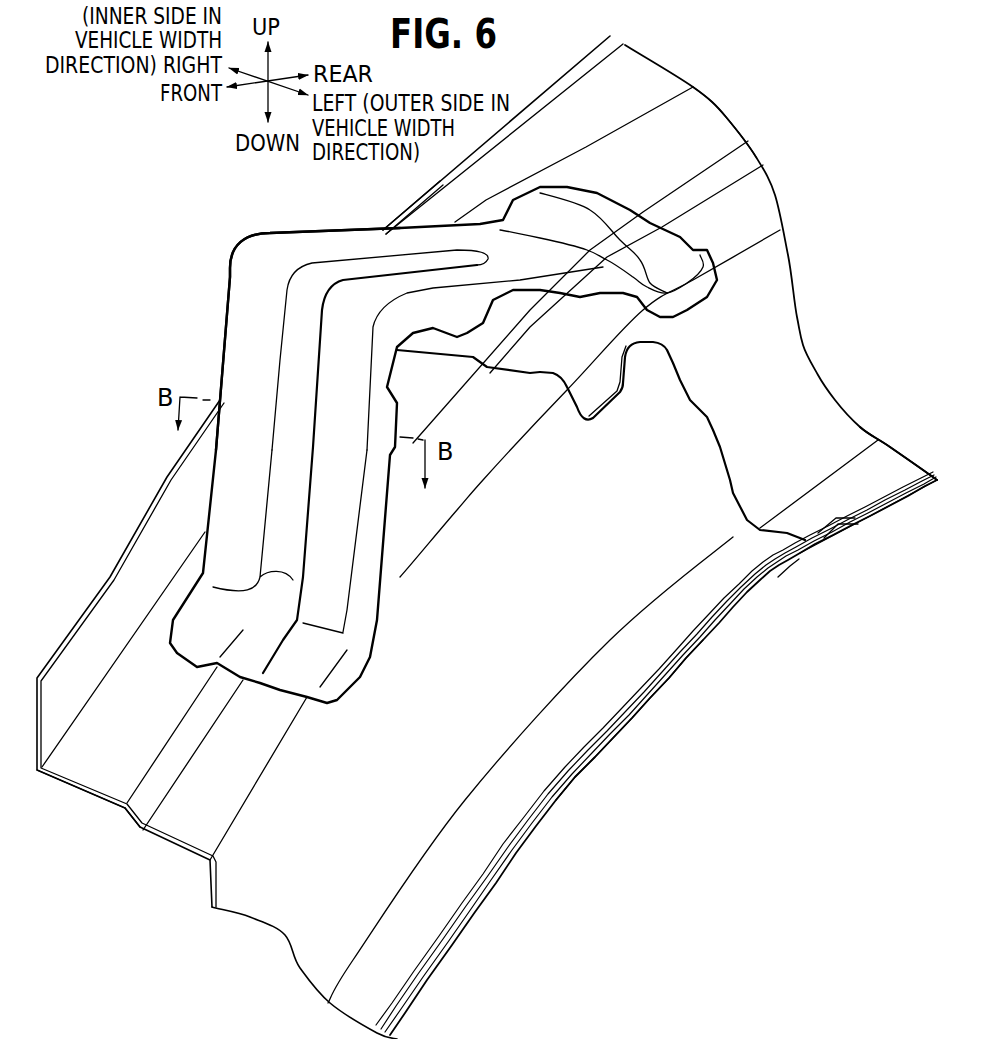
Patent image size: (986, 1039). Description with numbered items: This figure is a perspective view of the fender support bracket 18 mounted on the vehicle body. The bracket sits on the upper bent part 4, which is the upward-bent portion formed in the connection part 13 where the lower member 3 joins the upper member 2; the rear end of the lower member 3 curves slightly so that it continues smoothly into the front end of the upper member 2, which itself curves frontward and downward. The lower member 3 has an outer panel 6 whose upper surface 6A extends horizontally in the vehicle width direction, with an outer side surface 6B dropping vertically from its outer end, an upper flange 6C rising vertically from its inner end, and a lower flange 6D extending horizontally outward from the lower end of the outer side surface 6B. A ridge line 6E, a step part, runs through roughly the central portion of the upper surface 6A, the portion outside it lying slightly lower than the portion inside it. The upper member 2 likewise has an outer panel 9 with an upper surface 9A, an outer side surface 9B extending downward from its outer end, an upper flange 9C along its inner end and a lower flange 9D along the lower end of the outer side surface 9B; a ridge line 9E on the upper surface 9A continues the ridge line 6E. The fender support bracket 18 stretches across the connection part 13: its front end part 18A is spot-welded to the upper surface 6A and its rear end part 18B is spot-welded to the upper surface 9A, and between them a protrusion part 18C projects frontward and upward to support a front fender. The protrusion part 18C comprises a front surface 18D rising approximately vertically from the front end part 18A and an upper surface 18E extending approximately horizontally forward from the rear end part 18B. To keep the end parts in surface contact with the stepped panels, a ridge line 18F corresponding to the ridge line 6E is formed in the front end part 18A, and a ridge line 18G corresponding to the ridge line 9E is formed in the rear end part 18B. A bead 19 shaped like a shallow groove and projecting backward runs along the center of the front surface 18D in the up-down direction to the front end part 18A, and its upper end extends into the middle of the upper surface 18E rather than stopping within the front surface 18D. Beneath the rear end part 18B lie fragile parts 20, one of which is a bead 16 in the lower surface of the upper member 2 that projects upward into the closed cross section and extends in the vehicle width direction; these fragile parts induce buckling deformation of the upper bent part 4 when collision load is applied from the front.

The upper member 2 is at (883, 521).
The lower member 3 is at (550, 820).
The upper bent part 4 is at (690, 688).
The outer panel 6 is at (82, 804).
The upper surface 6A is at (85, 770).
The outer side surface 6B is at (313, 870).
The upper flange 6C is at (83, 650).
The lower flange 6D is at (407, 937).
The ridge line 6E is at (127, 827).
The outer panel 9 is at (717, 79).
The upper surface 9A is at (719, 130).
The outer side surface 9B is at (783, 329).
The upper flange 9C is at (650, 80).
The lower flange 9D is at (888, 473).
The ridge line 9E is at (752, 167).
The connection part 13 is at (672, 526).
The bead 16 is at (790, 567).
The fender support bracket 18 is at (203, 306).
The front end part 18A is at (210, 623).
The rear end part 18B is at (597, 192).
The protrusion part 18C is at (218, 268).
The front surface 18D is at (243, 380).
The upper surface 18E is at (363, 247).
The ridge line 18F is at (260, 643).
The ridge line 18G is at (410, 207).
The bead 19 is at (287, 500).
The fragile part 20 is at (824, 553).